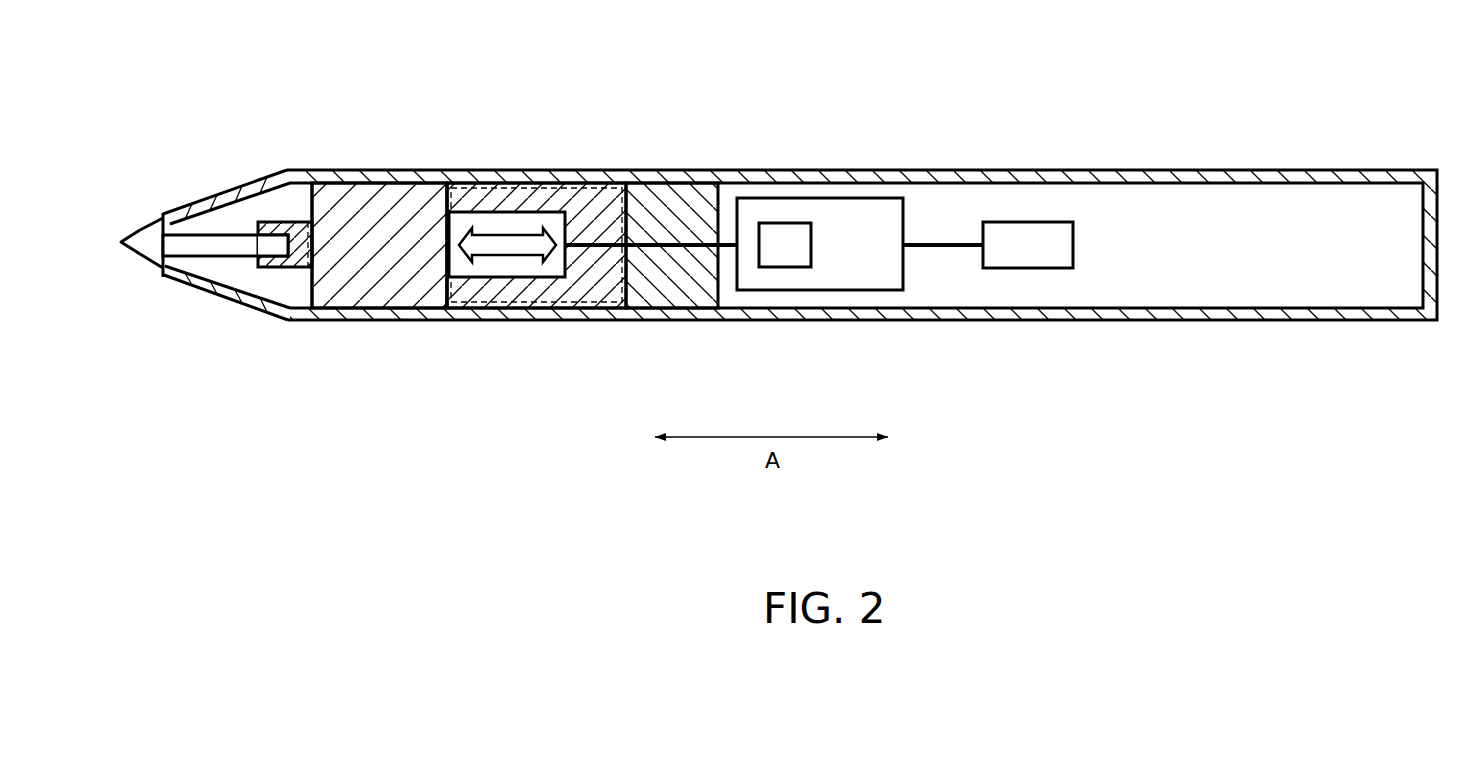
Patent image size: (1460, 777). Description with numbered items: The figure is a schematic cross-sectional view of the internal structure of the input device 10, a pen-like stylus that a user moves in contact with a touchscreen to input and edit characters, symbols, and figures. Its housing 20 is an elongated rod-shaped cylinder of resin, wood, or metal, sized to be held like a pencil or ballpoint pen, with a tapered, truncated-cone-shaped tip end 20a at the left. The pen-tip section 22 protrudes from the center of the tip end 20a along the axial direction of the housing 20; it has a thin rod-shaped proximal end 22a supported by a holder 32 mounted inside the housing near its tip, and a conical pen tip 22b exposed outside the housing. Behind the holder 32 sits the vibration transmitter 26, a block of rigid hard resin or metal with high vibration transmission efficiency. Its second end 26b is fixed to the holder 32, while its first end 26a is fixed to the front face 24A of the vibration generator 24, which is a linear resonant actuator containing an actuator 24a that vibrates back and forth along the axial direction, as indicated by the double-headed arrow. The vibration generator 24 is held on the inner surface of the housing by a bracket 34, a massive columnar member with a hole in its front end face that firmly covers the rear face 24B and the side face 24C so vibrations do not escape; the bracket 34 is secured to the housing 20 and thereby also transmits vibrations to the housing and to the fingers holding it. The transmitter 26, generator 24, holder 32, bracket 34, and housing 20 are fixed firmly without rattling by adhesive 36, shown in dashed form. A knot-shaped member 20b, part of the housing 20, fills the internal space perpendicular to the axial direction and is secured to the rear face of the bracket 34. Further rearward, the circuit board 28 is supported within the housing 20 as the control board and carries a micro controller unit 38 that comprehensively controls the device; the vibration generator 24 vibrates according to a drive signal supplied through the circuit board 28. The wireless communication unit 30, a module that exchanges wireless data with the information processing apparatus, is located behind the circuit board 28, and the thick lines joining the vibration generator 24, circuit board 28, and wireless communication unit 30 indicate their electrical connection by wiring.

The input device 10 is at (192, 41).
The housing 20 is at (800, 210).
The tip end 20a is at (215, 196).
The knot-shaped member 20b is at (680, 214).
The pen-tip section 22 is at (192, 257).
The proximal end 22a is at (272, 255).
The pen tip 22b is at (140, 250).
The vibration generator 24 is at (541, 260).
The front face 24A is at (446, 252).
The rear face 24B is at (624, 258).
The side face 24C is at (505, 305).
The actuator 24a is at (530, 278).
The vibration transmitter 26 is at (384, 204).
The first end 26a is at (447, 195).
The second end 26b is at (304, 190).
The circuit board 28 is at (774, 240).
The wireless communication unit 30 is at (1028, 185).
The holder 32 is at (268, 222).
The bracket 34 is at (536, 197).
The adhesive 36 is at (608, 200).
The MCU 38 is at (783, 258).